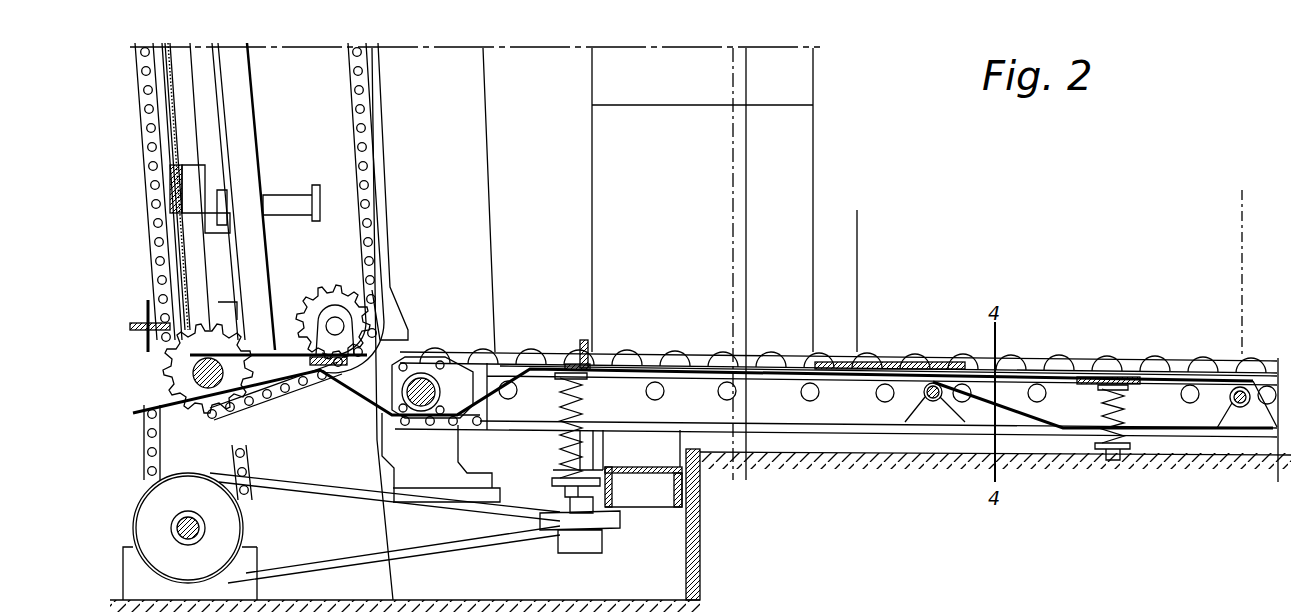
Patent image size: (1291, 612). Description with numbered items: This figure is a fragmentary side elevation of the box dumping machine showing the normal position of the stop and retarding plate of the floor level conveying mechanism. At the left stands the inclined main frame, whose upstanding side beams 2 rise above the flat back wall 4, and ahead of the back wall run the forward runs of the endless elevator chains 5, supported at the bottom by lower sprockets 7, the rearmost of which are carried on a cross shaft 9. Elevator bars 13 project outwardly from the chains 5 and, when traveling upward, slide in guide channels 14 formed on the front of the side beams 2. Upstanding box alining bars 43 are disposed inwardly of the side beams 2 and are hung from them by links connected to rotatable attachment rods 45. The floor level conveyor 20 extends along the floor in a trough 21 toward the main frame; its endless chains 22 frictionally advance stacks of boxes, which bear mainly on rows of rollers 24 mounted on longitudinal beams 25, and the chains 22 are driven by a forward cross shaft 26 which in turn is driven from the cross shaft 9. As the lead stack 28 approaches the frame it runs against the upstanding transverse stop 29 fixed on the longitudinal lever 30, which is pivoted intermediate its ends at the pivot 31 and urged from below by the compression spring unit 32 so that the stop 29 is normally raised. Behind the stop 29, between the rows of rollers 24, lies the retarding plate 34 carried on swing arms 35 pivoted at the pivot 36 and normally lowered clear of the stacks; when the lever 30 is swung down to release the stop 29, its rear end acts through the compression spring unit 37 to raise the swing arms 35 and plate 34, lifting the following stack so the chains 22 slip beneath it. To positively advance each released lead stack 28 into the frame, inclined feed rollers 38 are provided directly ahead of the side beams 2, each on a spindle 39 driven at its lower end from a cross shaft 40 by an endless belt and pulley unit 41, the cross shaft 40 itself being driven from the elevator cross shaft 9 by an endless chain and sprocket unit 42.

The side beams 2 is at (325, 135).
The back wall 4 is at (177, 126).
The elevator chains 5 is at (380, 250).
The lower sprockets 7 is at (322, 290).
The cross shaft 9 is at (218, 388).
The elevator bars 13 is at (135, 327).
The guide channels 14 is at (380, 185).
The floor level conveyor 20 is at (1124, 356).
The trough 21 is at (868, 449).
The endless chains 22 is at (620, 357).
The rollers 24 is at (798, 363).
The longitudinal beams 25 is at (815, 442).
The forward cross shaft 26 is at (421, 377).
The lead stack 28 is at (824, 178).
The transverse stop 29 is at (580, 345).
The longitudinal lever 30 is at (658, 373).
The pivot 31 is at (935, 380).
The compression spring unit 32 is at (585, 400).
The retarding plate 34 is at (868, 361).
The swing arms 35 is at (1022, 385).
The pivot 36 is at (1232, 405).
The compression spring unit 37 is at (1112, 430).
The feed rollers 38 is at (497, 237).
The spindle 39 is at (585, 508).
The cross shaft 40 is at (200, 522).
The endless belt and pulley unit 41 is at (338, 497).
The endless chain and sprocket unit 42 is at (160, 457).
The box alining bars 43 is at (250, 166).
The attachment rods 45 is at (295, 205).